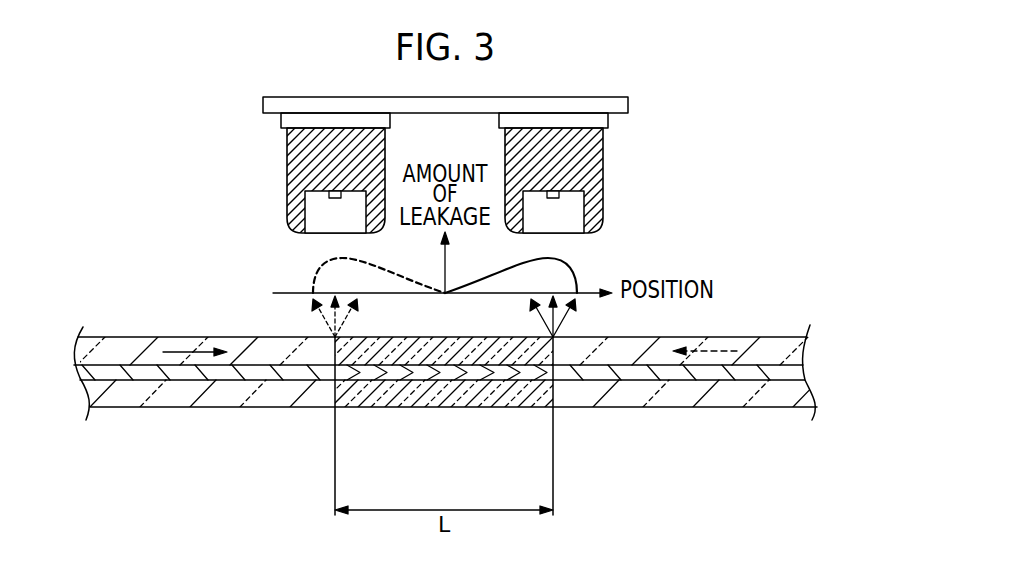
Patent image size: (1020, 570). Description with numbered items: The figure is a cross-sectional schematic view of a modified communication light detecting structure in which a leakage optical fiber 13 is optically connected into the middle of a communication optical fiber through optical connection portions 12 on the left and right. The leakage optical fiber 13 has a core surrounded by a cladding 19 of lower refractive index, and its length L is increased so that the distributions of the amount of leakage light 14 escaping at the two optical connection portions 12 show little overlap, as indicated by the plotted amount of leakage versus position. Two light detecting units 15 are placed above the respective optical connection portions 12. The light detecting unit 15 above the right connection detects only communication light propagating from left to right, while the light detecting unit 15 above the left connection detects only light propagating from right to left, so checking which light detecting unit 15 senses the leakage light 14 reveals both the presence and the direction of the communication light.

The optical connection portion 12 is at (334, 409).
The leakage optical fiber 13 is at (448, 419).
The leakage light 14 is at (335, 334).
The light detecting unit 15 is at (287, 175).
The cladding 19 is at (504, 405).